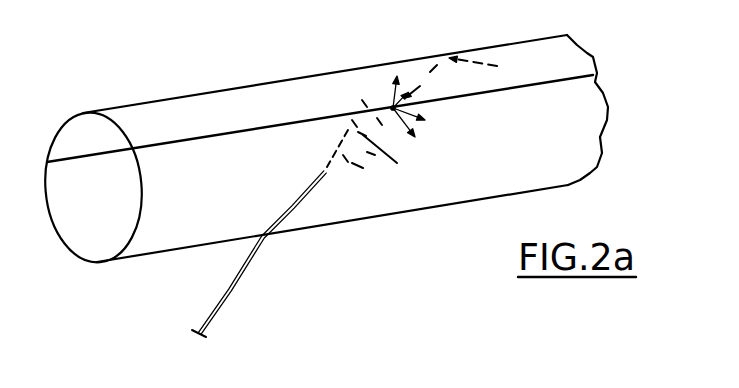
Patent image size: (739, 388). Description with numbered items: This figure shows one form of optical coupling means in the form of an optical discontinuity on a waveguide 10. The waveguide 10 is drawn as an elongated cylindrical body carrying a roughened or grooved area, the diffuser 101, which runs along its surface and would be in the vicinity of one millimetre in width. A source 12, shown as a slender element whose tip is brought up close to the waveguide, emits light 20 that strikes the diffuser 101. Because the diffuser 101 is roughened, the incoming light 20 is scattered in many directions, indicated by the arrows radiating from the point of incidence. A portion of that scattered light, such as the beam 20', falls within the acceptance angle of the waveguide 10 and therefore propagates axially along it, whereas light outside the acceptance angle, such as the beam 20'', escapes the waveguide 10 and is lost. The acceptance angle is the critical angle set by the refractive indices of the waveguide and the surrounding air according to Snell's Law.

The waveguide 10 is at (217, 80).
The roughened or grooved area (diffuser) 101 is at (147, 147).
The source 12 is at (251, 281).
The light 20 is at (376, 137).
The beam 20' is at (451, 79).
The beam 20'' is at (435, 33).